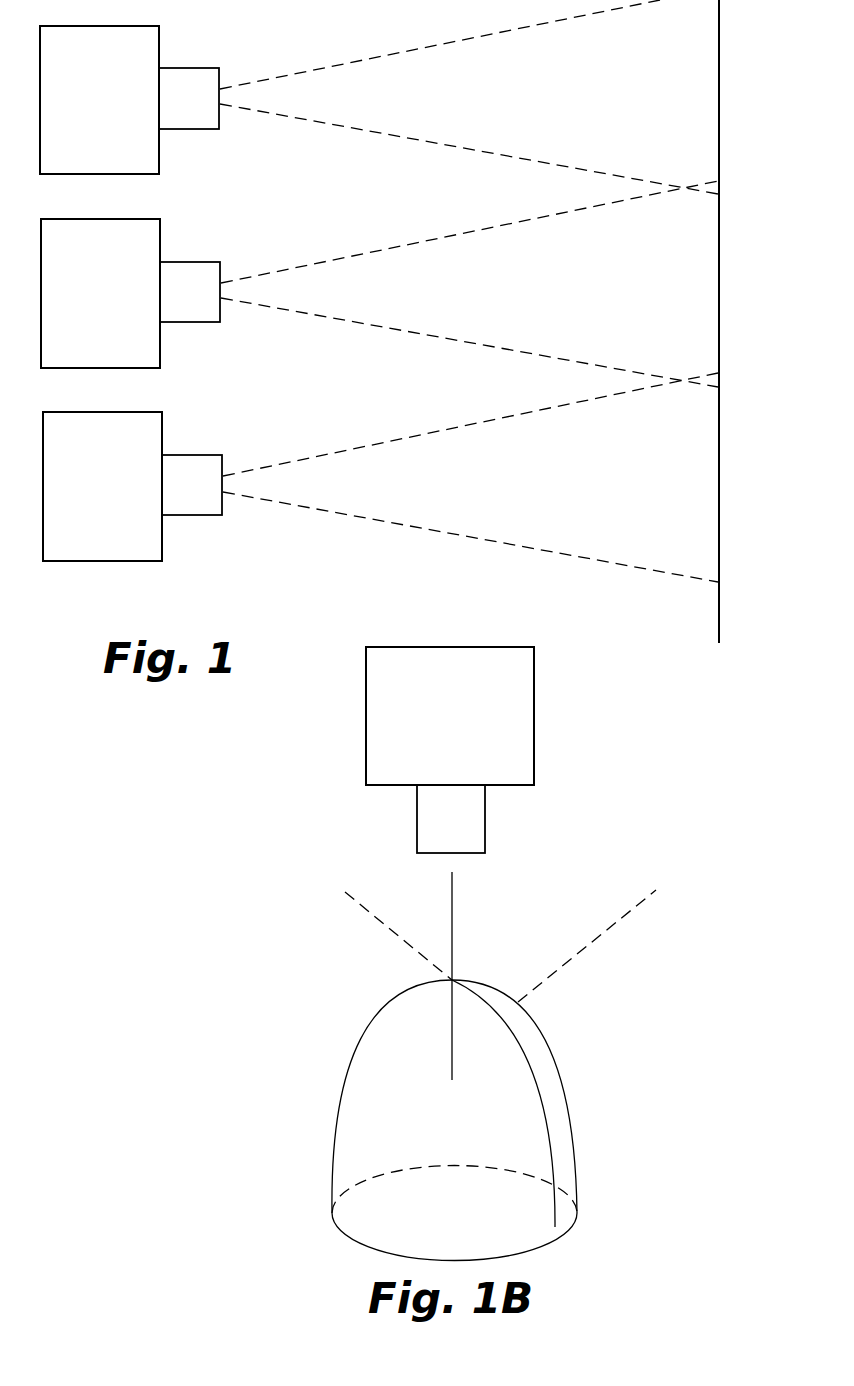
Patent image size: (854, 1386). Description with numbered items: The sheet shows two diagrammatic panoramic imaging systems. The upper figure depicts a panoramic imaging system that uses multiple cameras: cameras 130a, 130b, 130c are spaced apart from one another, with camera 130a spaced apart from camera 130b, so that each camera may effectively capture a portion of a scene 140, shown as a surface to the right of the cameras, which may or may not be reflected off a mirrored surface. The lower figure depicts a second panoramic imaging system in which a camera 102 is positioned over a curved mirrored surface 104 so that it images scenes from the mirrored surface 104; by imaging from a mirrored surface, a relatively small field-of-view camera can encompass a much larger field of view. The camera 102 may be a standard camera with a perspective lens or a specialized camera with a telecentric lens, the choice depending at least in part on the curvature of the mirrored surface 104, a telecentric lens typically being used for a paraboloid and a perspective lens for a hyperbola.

In FIG. 1, the camera 130a is at (160, 36).
In FIG. 1, the camera 130b is at (162, 238).
In FIG. 1, the camera 130c is at (163, 432).
In FIG. 1, the scene 140 is at (720, 266).
In FIG. 1B, the camera 102 is at (535, 709).
In FIG. 1B, the curved mirrored surface 104 is at (545, 1048).